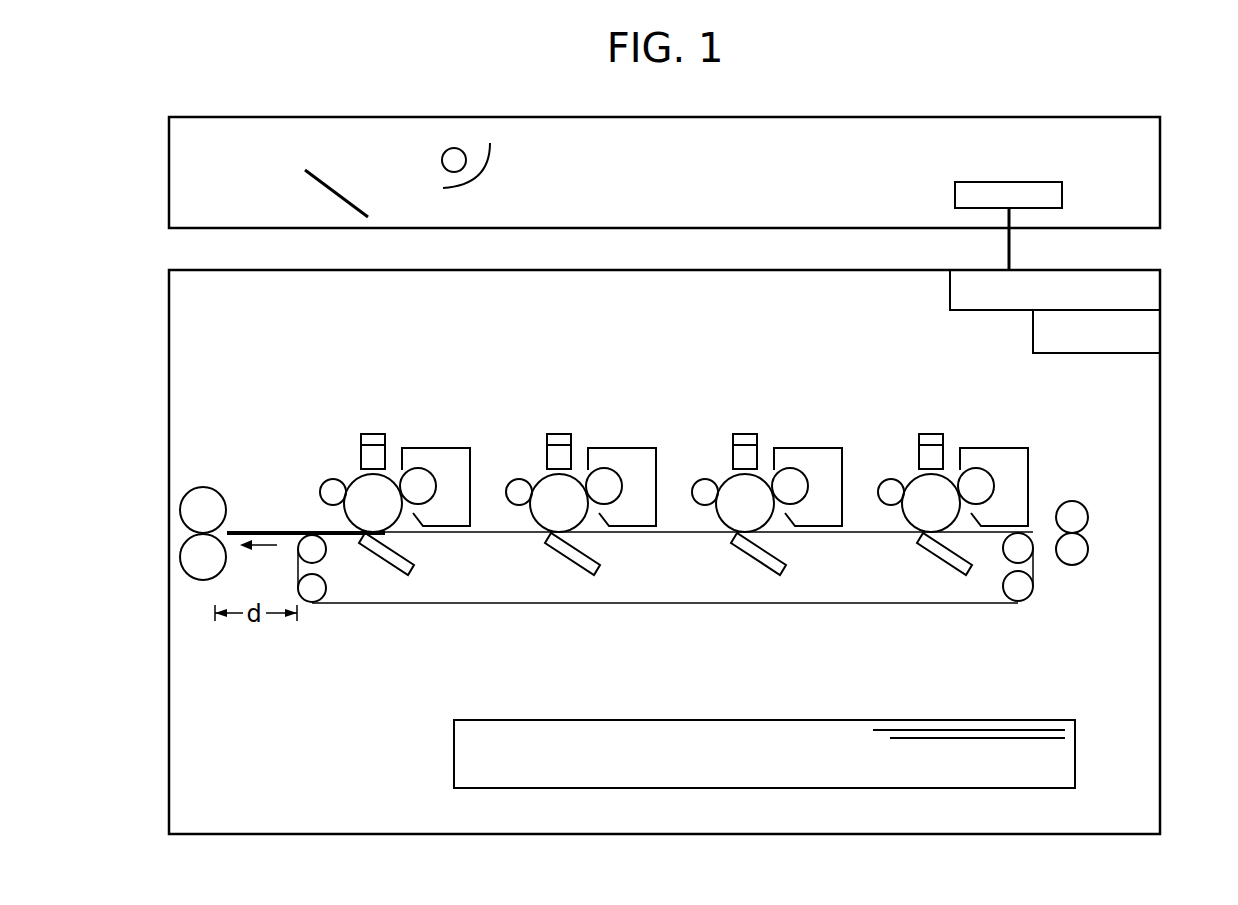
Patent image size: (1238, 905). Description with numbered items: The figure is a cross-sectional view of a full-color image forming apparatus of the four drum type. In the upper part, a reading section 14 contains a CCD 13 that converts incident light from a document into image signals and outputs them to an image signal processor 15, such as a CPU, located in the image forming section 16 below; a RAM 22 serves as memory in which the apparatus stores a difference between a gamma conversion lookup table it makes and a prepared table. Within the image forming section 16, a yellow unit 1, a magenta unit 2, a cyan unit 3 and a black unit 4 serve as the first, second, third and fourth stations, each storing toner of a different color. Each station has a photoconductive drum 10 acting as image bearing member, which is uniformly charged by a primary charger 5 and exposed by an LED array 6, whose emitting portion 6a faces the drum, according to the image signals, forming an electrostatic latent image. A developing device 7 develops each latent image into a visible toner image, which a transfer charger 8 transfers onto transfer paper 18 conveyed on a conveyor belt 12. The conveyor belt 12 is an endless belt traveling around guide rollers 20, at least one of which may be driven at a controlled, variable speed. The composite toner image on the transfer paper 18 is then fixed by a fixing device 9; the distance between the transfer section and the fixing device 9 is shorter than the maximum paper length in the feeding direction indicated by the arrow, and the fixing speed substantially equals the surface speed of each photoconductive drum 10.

The yellow unit 1 is at (981, 405).
The magenta unit 2 is at (795, 405).
The cyan unit 3 is at (609, 405).
The black unit 4 is at (423, 405).
The primary charger 5 is at (330, 480).
The LED array 6 is at (378, 434).
The light emitting portion of exposure head 6a is at (368, 436).
The developing device 7 is at (451, 448).
The transfer charger 8 is at (395, 572).
The fixing device 9 is at (203, 487).
The photoconductive drum 10 is at (350, 517).
The conveyor belt 12 is at (692, 603).
The CCD 13 is at (1002, 182).
The reading section 14 is at (1162, 193).
The image signal processor 15 is at (1160, 285).
The image forming section 16 is at (1161, 400).
The transfer paper 18 is at (250, 531).
The guide rollers 20 is at (318, 594).
The RAM 22 is at (1160, 330).